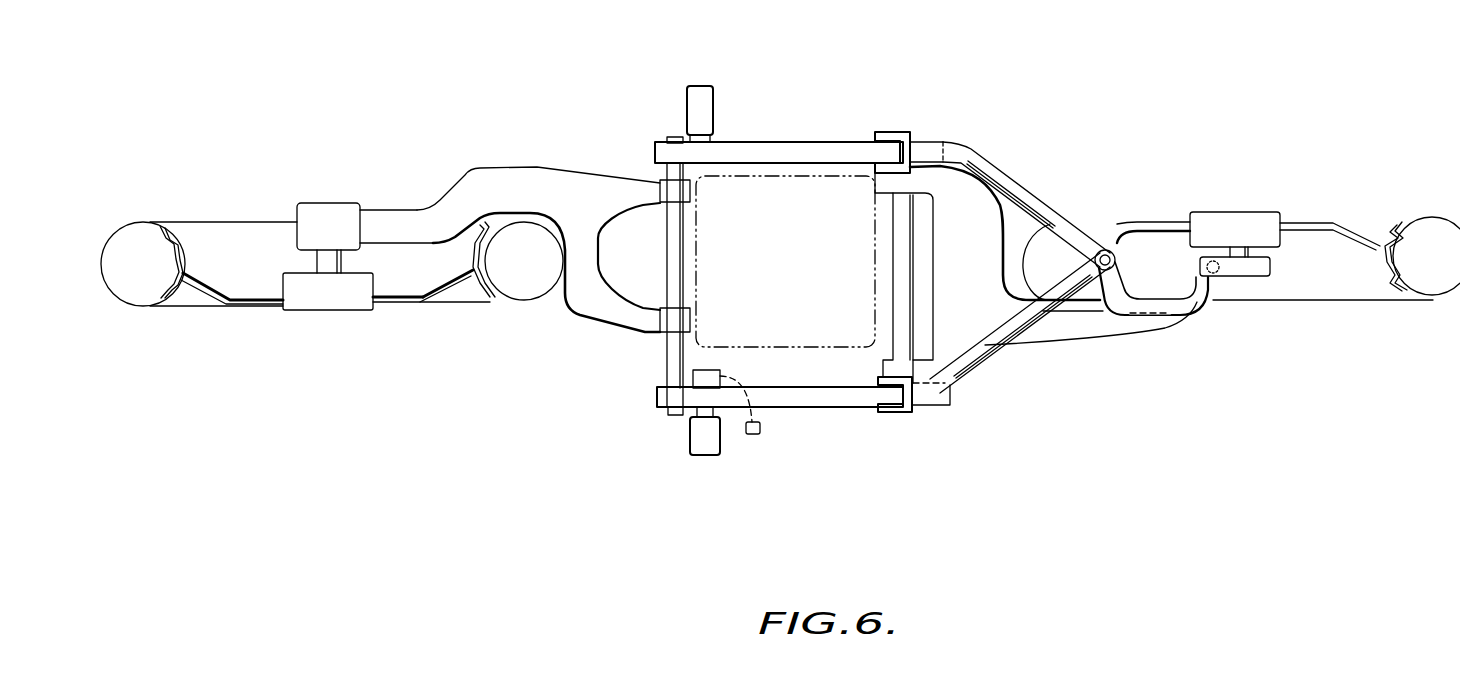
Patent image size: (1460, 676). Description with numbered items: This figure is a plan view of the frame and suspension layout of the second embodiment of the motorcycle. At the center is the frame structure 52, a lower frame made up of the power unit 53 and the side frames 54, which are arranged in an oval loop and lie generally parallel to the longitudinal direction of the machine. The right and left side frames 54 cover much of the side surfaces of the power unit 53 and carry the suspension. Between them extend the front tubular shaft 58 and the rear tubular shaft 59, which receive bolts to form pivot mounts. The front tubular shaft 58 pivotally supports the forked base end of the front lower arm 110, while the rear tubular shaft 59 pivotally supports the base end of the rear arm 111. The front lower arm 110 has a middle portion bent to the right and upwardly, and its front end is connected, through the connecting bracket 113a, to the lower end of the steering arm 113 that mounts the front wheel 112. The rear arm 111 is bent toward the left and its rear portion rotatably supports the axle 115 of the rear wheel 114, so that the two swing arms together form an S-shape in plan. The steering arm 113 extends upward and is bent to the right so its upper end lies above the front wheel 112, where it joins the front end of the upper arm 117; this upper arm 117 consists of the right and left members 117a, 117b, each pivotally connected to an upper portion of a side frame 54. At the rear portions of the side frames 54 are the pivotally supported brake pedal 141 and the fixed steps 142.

The frame structure 52 is at (828, 198).
The power unit 53 is at (835, 330).
The side frames 54 is at (755, 150).
The front tubular shaft 58 is at (910, 220).
The rear tubular shaft 59 is at (668, 362).
The front lower arm 110 is at (1098, 337).
The rear arm 111 is at (520, 182).
The front wheel 112 is at (1430, 285).
The steering arm 113 is at (1190, 310).
The connecting bracket 113a is at (1245, 270).
The rear wheel 114 is at (145, 287).
The axle 115 is at (330, 265).
The upper arm 117 is at (1018, 274).
The right member of upper arm 117a is at (1017, 350).
The left member of upper arm 117b is at (1048, 210).
The brake pedal 141 is at (752, 434).
The steps 142 is at (705, 110).